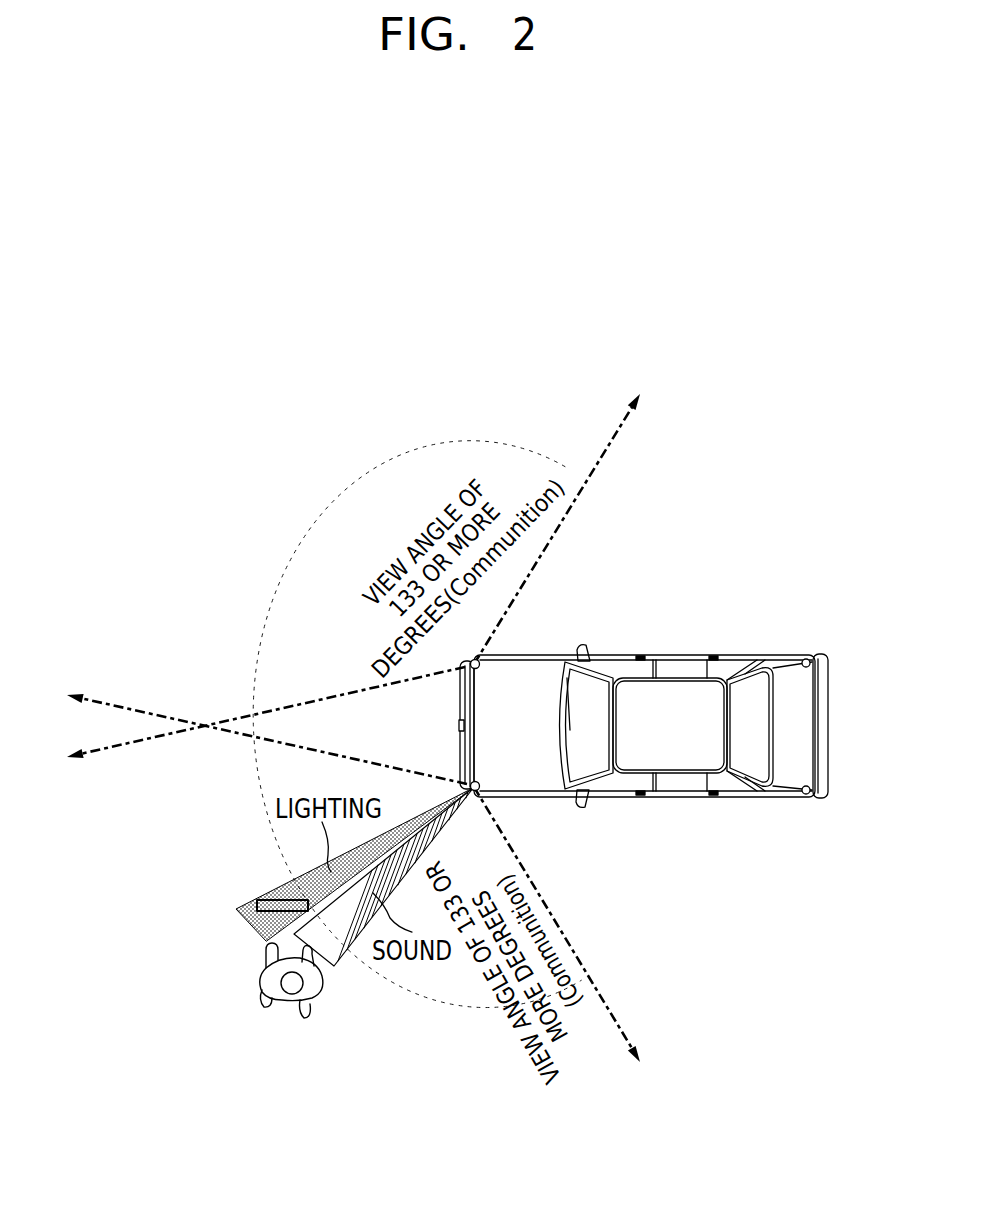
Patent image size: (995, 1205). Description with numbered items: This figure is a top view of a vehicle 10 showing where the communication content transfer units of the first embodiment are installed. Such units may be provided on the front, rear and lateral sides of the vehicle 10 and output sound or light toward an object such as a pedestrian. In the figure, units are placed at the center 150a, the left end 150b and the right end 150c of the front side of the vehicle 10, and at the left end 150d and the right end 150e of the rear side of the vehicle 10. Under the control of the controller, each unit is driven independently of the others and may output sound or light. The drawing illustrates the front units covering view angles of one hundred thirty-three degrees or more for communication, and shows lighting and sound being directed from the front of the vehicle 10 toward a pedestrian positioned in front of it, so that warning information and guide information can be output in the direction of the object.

The vehicle 10 is at (671, 688).
The center of the front side (communication content transfer unit) 150a is at (461, 727).
The left end of the front side (communication content transfer unit) 150b is at (480, 790).
The right end of the front side (communication content transfer unit) 150c is at (480, 661).
The left end of the rear side (communication content transfer unit) 150d is at (806, 656).
The right end of the rear side (communication content transfer unit) 150e is at (806, 798).